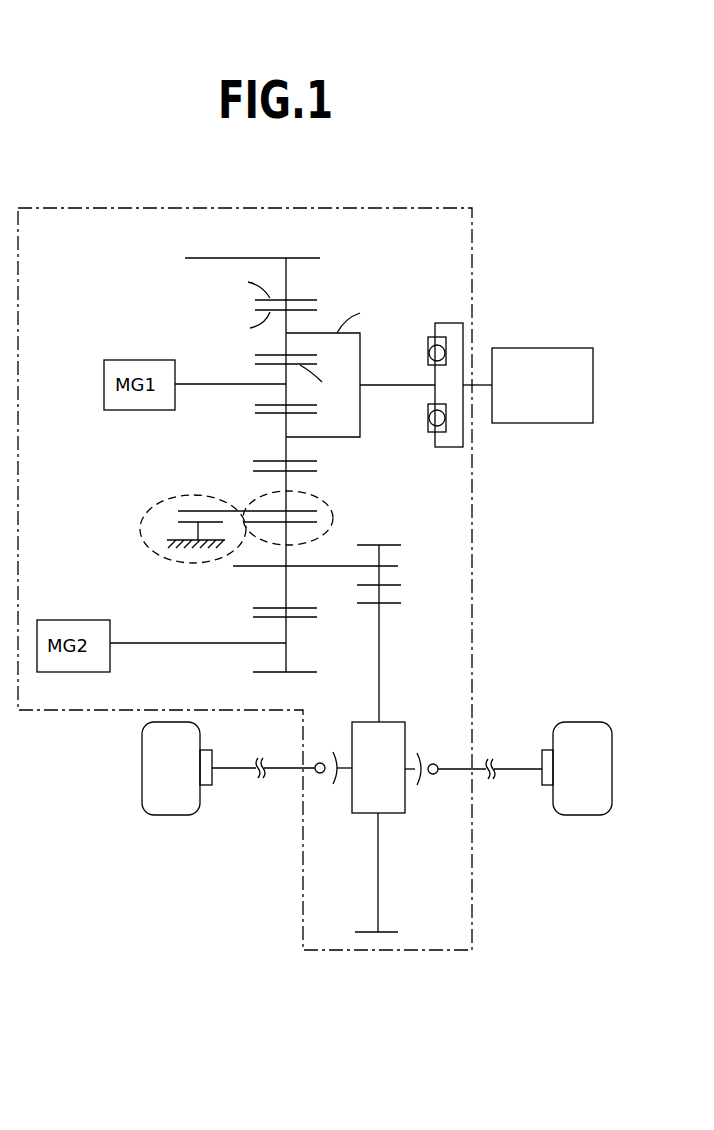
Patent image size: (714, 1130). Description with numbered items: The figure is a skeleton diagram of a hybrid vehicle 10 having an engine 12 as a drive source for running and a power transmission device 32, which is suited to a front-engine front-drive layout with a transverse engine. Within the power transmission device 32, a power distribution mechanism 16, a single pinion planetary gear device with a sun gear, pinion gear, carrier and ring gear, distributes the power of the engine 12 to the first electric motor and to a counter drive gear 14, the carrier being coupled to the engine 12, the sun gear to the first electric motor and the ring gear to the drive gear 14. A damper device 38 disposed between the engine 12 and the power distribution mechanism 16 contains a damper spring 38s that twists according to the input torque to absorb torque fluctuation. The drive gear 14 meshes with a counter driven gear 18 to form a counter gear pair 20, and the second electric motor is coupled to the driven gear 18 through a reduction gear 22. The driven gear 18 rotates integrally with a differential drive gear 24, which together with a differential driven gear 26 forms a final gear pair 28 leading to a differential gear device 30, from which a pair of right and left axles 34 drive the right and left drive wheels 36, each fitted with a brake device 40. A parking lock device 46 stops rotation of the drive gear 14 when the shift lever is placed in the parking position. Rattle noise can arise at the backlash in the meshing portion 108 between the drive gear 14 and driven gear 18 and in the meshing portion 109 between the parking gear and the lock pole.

The hybrid vehicle 10 is at (543, 242).
The engine 12 is at (550, 360).
The counter drive gear 14 is at (207, 257).
The power distribution mechanism 16 is at (366, 291).
The counter driven gear 18 is at (270, 605).
The counter gear pair 20 is at (360, 507).
The reduction gear 22 is at (268, 675).
The differential drive gear 24 is at (390, 545).
The differential driven gear 26 is at (388, 935).
The final gear pair 28 is at (420, 612).
The differential gear device 30 is at (418, 817).
The power transmission device 32 is at (178, 207).
The axle 34 is at (248, 772).
The drive wheel 36 is at (172, 805).
The damper device 38 is at (458, 454).
The damper spring 38s is at (445, 352).
The brake device 40 is at (205, 790).
The parking lock device 46 is at (162, 518).
The meshing portion 108 is at (262, 498).
The meshing portion 109 is at (160, 550).